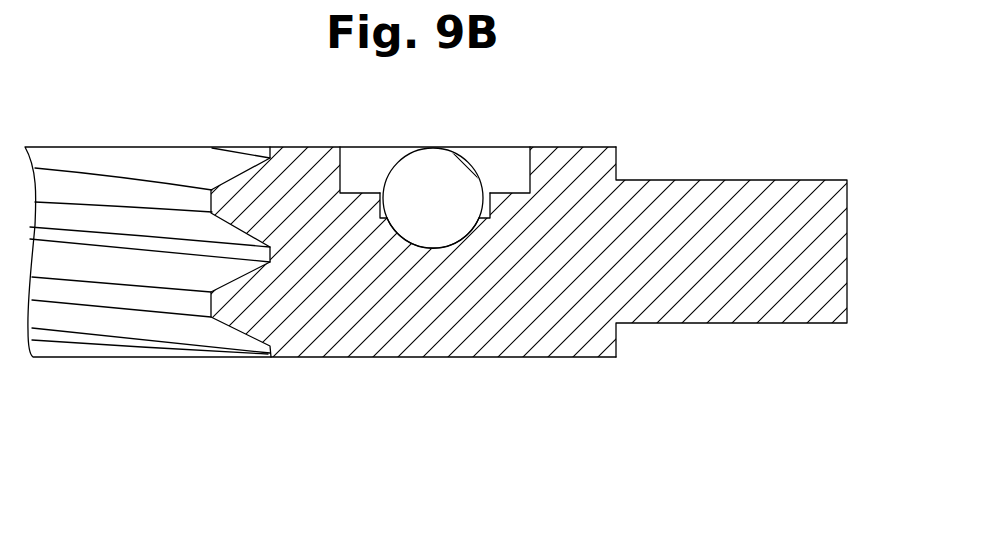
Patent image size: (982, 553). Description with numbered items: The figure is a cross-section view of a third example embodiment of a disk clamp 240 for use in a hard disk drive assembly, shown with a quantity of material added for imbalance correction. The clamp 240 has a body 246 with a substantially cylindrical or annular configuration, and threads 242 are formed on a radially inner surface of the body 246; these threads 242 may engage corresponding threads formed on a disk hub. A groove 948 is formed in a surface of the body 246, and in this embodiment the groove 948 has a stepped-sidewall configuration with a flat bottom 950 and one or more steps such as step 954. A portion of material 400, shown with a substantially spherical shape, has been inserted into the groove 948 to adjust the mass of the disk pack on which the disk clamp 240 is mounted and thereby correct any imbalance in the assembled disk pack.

The disk clamp 240 is at (272, 395).
The threads 242 is at (197, 198).
The body 246 is at (587, 148).
The portion of material 400 is at (438, 190).
The groove 948 is at (509, 172).
The flat bottom 950 is at (433, 249).
The step 954 is at (382, 193).